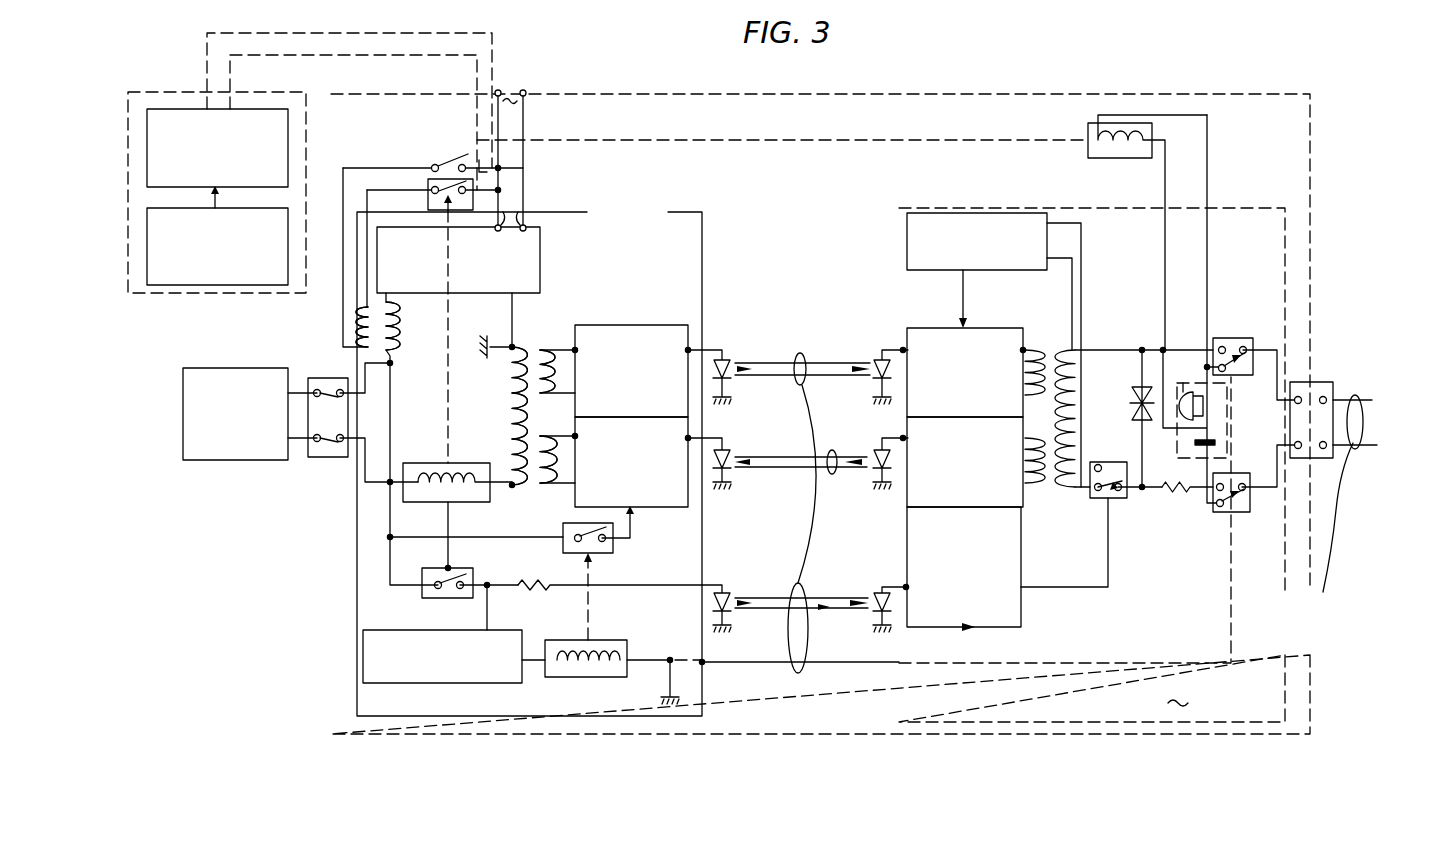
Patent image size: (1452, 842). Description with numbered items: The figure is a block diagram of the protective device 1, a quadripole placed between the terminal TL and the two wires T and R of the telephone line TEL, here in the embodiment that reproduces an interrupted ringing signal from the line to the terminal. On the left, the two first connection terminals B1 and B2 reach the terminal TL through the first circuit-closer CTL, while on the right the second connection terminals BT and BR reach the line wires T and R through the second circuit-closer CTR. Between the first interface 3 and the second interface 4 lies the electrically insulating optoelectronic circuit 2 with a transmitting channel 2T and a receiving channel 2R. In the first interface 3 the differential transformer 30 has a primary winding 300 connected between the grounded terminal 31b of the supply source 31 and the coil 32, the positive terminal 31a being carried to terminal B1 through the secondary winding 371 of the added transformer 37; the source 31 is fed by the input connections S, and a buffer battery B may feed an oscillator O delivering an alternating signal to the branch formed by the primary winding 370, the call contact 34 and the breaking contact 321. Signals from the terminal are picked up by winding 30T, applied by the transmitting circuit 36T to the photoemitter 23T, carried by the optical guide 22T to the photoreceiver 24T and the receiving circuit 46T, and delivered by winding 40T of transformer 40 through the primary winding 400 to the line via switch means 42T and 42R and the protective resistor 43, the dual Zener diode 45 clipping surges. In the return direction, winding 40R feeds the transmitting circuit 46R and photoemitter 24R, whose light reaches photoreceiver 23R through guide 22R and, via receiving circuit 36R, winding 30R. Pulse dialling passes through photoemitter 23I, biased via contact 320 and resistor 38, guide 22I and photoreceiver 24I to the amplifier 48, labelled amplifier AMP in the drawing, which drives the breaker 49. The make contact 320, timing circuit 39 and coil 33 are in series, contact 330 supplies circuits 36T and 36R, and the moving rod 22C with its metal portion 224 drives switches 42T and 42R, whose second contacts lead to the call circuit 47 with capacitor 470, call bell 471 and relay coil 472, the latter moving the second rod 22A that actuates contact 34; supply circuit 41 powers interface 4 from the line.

The protective device 1 is at (892, 166).
The electrically insulating optoelectronic circuit 2 is at (832, 243).
The first interface 3 is at (659, 213).
The second interface 4 is at (1092, 465).
The positive terminal of supply source 31a is at (176, 92).
The negative or grounded terminal of supply source 31b is at (496, 325).
The supply source 31 is at (540, 245).
The coil of the first relay 32 is at (409, 470).
The coil of the second relay 33 is at (605, 678).
The call contact 34 is at (446, 156).
The breaking contact 321 is at (428, 182).
The transformer 37 is at (392, 365).
The primary winding of transformer 37 370 is at (343, 321).
The secondary winding of transformer 37 371 is at (397, 335).
The differential transformer 30 is at (534, 341).
The primary winding of transformer 30 300 is at (510, 382).
The first secondary winding of transformer 30 30T is at (556, 383).
The second secondary winding of transformer 30 30R is at (556, 480).
The transmitting circuit 36T is at (640, 325).
The receiving circuit 36R is at (634, 510).
The resistor 38 is at (606, 598).
The timing circuit 39 is at (456, 684).
The make contact 320 is at (457, 569).
The make contact 330 is at (614, 552).
The second moving rod 22A is at (714, 132).
The optical guide 22T is at (830, 356).
The optical guide 22R is at (793, 468).
The optical guide 22I is at (824, 608).
The moving insulating rod 22C is at (830, 665).
The photoemitter 23T is at (733, 340).
The photoreceiver 23R is at (724, 447).
The photoemitter 23I is at (724, 587).
The photoreceiver 24T is at (872, 385).
The photoemitter 24R is at (876, 449).
The photoreceiver 24I is at (878, 590).
The transmitting channel 2T is at (806, 556).
The receiving channel 2R is at (829, 477).
The differential transformer 40 is at (1052, 333).
The primary winding of transformer 40 400 is at (1072, 415).
The first secondary winding of transformer 40 40T is at (1043, 346).
The second secondary winding of transformer 40 40R is at (1037, 492).
The supply circuit 41 is at (996, 272).
The first switch means 42T is at (1232, 338).
The second switch means 42R is at (1232, 520).
The protective resistor 43 is at (1176, 495).
The dual Zener diode 45 is at (1136, 390).
The receiving circuit 46T is at (930, 318).
The transmitting circuit 46R is at (902, 496).
The call circuit 47 is at (1178, 452).
The capacitor 470 is at (1216, 444).
The call bell 471 is at (1183, 391).
The relay coil 472 is at (1128, 158).
The amplifier 48 is at (969, 630).
The breaker 49 is at (1110, 502).
The metal terminal portion of rod 22C 224 is at (1230, 568).
The oscillator O is at (147, 150).
The buffer battery B is at (147, 231).
The terminal TL is at (222, 368).
The first circuit-closer CTL is at (313, 378).
The first connection terminal B1 is at (341, 397).
The first connection terminal B2 is at (323, 452).
The input connections to main power supply S is at (510, 160).
The second circuit-closer CTR is at (1323, 382).
The second connection terminal BT is at (1296, 382).
The second connection terminal BR is at (1296, 461).
The telephone line wire T is at (1366, 400).
The telephone line wire R is at (1364, 449).
The amplifier label AMP is at (1005, 606).
The telephone line TEL is at (1294, 544).